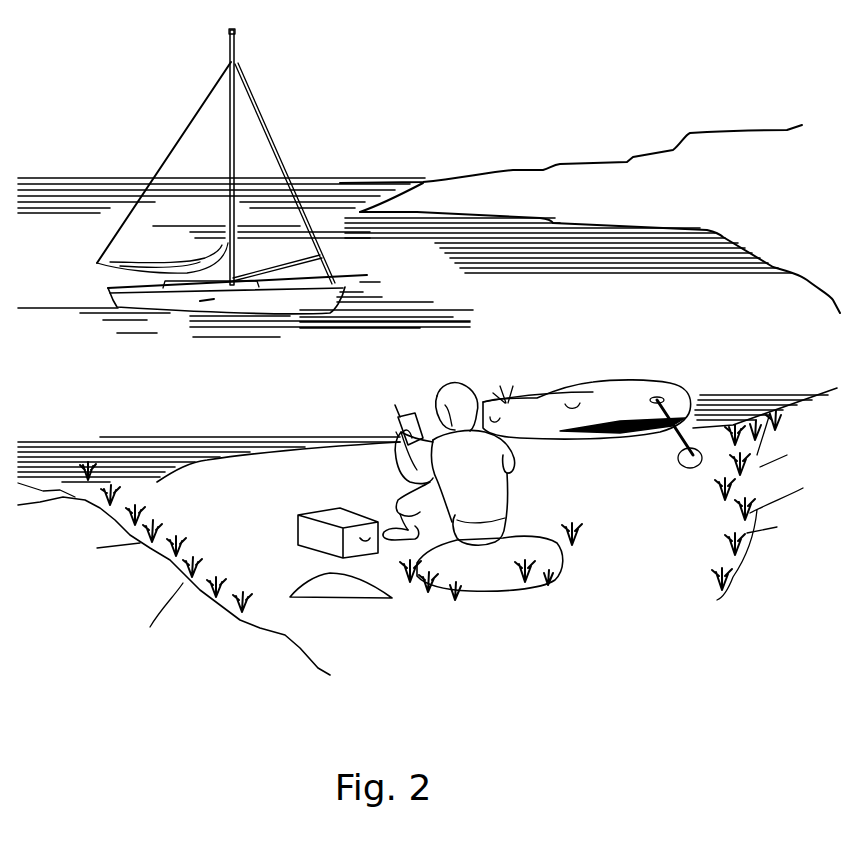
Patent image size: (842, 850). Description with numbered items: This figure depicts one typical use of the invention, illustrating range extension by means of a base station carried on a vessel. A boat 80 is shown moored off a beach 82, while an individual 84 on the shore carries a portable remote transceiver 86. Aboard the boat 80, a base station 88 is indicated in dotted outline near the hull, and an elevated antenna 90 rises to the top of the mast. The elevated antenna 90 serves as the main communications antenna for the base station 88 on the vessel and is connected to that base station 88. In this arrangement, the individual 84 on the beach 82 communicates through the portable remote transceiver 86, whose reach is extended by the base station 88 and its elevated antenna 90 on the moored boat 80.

The boat 80 is at (295, 306).
The beach 82 is at (58, 627).
The individual 84 is at (523, 479).
The portable remote transceiver 86 is at (396, 422).
The base station 88 is at (205, 302).
The elevated antenna 90 is at (235, 31).